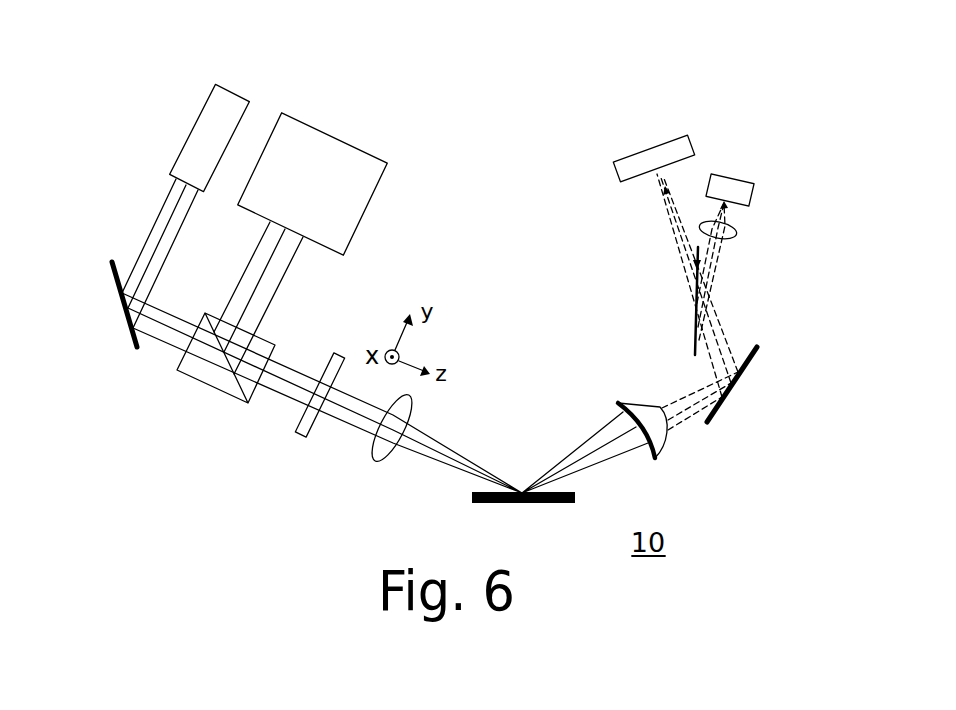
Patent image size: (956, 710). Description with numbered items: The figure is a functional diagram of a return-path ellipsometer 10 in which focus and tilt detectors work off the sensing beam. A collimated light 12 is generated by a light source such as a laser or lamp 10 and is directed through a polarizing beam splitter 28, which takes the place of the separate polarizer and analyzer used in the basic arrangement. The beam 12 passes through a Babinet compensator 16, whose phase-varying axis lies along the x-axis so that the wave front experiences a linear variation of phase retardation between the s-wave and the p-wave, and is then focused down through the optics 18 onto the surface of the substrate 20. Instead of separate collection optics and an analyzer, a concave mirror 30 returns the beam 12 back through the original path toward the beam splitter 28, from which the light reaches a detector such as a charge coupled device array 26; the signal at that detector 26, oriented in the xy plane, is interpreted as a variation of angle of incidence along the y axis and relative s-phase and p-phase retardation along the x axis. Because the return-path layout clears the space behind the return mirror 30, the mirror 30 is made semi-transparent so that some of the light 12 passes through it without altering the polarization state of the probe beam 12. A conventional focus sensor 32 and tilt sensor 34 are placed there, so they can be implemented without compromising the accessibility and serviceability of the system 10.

The ellipsometer 10 is at (230, 88).
The collimated light 12 is at (163, 343).
The Babinet compensator 16 is at (300, 435).
The optics 18 is at (372, 447).
The substrate 20 is at (548, 503).
The charge coupled device array 26 is at (366, 208).
The polarizing beam splitter 28 is at (210, 385).
The semi-transparent mirror 30 is at (660, 447).
The focus sensor 32 is at (695, 145).
The tilt sensor 34 is at (756, 193).